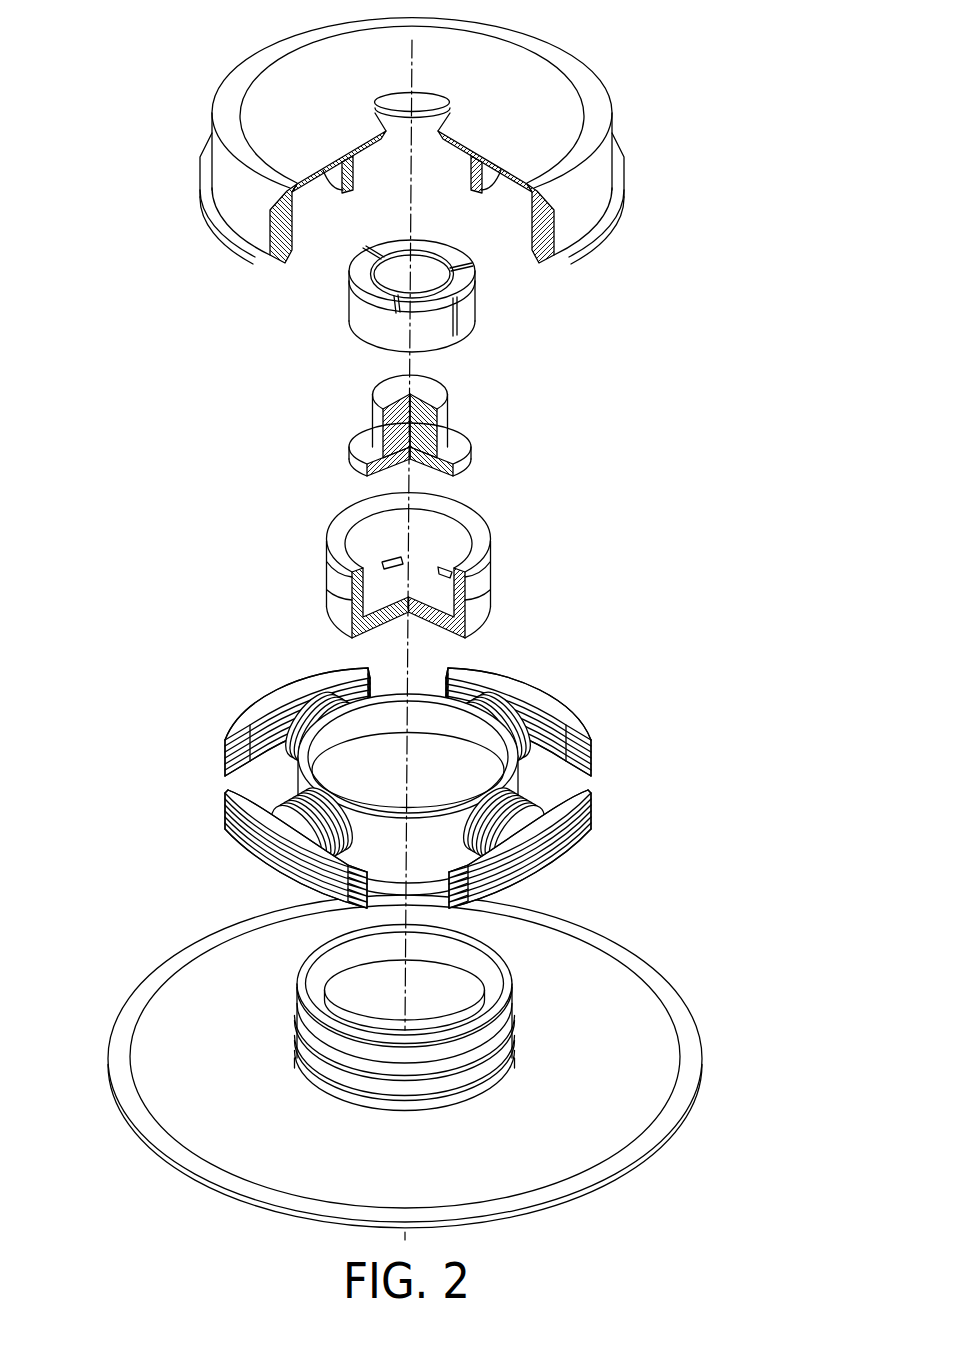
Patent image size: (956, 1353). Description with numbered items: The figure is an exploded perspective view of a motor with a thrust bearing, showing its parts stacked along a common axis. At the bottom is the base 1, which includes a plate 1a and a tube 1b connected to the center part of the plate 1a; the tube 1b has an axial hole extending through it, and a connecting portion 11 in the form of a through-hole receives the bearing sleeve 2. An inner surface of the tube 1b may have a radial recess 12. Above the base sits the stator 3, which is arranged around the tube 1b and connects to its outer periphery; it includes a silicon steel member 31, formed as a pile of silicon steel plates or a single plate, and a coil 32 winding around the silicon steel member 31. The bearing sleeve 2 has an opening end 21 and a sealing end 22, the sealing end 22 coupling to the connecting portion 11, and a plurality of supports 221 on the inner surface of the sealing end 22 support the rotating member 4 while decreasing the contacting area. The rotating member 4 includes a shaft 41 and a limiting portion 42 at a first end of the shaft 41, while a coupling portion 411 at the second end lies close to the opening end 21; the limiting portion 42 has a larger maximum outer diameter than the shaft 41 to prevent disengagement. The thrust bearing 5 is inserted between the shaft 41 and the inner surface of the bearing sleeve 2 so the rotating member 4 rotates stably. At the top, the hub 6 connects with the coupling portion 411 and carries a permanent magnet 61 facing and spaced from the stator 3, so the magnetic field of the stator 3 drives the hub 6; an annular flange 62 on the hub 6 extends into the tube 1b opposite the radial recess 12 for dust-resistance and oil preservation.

The base 1 is at (366, 1043).
The plate 1a is at (110, 1048).
The tube 1b is at (304, 1013).
The connecting portion 11 is at (347, 1003).
The radial recess 12 is at (481, 967).
The bearing sleeve 2 is at (433, 571).
The opening end 21 is at (453, 537).
The sealing end 22 is at (440, 638).
The supports 221 is at (390, 558).
The stator 3 is at (452, 771).
The silicon steel member 31 is at (408, 722).
The coil 32 is at (503, 727).
The rotating member 4 is at (468, 414).
The shaft 41 is at (443, 430).
The coupling portion 411 is at (450, 397).
The limiting portion 42 is at (460, 457).
The thrust bearing 5 is at (465, 305).
The hub 6 is at (429, 162).
The permanent magnet 61 is at (538, 253).
The annular flange 62 is at (350, 176).